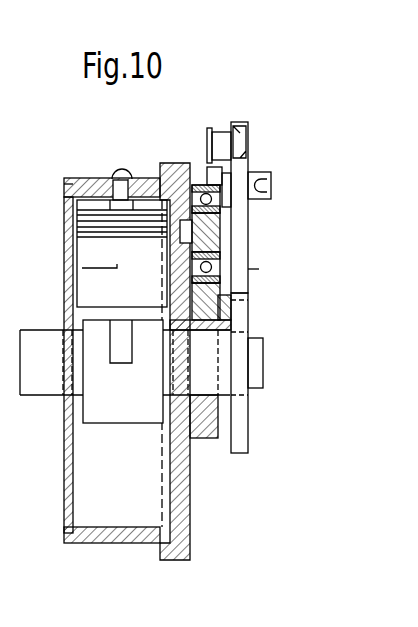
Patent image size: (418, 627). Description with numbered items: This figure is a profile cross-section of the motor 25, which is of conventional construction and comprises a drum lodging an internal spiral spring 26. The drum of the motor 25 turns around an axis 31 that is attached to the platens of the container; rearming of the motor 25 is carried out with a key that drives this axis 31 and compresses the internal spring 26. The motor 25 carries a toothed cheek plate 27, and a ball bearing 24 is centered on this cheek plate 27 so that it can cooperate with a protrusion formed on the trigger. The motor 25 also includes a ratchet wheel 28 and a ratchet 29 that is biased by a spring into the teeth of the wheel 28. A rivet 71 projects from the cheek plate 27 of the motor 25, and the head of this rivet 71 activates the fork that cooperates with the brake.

The ball bearing 24 is at (243, 221).
The motor 25 is at (98, 182).
The internal spiral spring 26 is at (63, 273).
The toothed cheek plate 27 is at (182, 518).
The ratchet wheel 28 is at (238, 433).
The ratchet 29 is at (262, 216).
The axis 31 is at (262, 358).
The rivet 71 is at (232, 320).